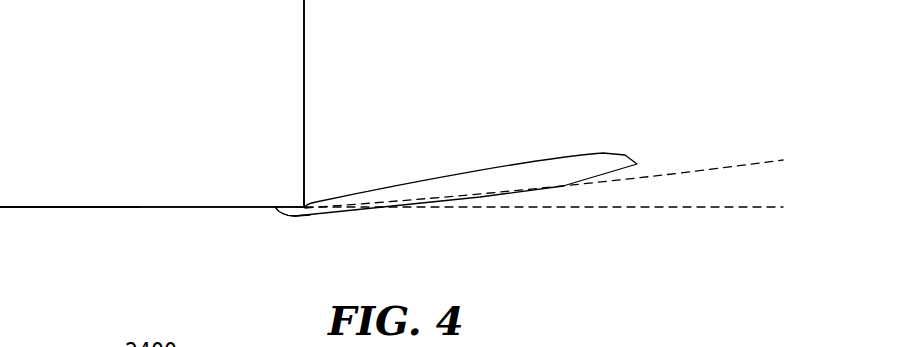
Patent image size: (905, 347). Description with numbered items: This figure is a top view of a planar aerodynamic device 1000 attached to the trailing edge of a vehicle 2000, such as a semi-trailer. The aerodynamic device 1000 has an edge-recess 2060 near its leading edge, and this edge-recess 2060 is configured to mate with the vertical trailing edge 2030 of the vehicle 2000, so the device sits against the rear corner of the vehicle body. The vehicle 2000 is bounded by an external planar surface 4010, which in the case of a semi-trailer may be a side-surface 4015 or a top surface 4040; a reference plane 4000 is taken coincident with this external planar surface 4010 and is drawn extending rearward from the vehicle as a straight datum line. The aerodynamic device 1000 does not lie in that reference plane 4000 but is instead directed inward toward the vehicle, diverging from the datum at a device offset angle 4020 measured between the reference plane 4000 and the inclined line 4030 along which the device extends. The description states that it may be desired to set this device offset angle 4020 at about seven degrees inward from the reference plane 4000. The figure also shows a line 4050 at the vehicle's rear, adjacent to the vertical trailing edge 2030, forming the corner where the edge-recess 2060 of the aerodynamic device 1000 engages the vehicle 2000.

The aerodynamic device 1000 is at (600, 139).
The vehicle 2000 is at (89, 62).
The vertical trailing edge 2030 is at (300, 199).
The edge-recess 2060 is at (297, 219).
The reference plane 4000 is at (601, 210).
The external planar surface 4010 is at (250, 69).
The side-surface 4015 is at (66, 212).
The device offset angle 4020 is at (652, 179).
The inclined reference line 4030 is at (708, 168).
The top surface 4040 is at (250, 97).
The vertical wall 4050 is at (313, 73).